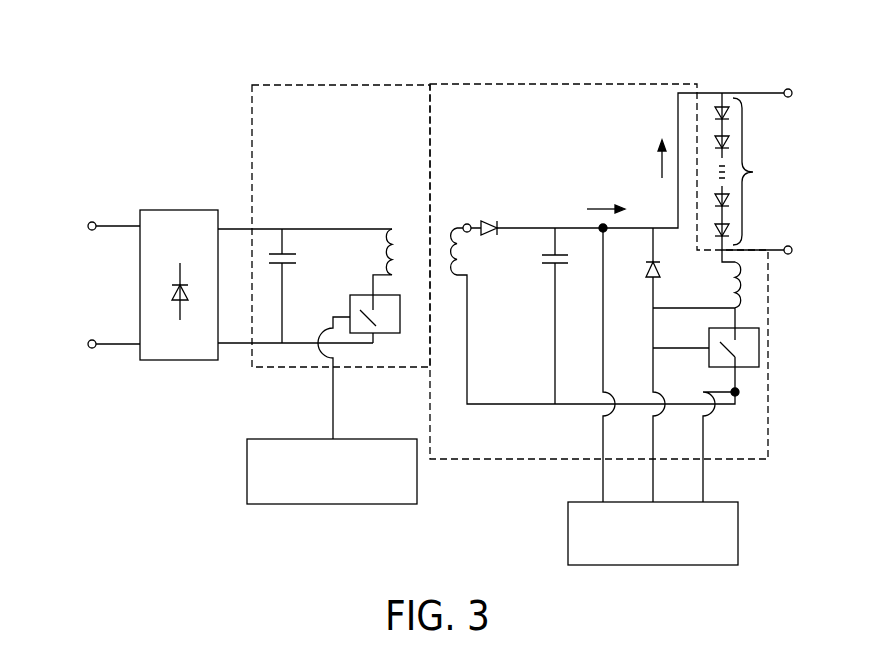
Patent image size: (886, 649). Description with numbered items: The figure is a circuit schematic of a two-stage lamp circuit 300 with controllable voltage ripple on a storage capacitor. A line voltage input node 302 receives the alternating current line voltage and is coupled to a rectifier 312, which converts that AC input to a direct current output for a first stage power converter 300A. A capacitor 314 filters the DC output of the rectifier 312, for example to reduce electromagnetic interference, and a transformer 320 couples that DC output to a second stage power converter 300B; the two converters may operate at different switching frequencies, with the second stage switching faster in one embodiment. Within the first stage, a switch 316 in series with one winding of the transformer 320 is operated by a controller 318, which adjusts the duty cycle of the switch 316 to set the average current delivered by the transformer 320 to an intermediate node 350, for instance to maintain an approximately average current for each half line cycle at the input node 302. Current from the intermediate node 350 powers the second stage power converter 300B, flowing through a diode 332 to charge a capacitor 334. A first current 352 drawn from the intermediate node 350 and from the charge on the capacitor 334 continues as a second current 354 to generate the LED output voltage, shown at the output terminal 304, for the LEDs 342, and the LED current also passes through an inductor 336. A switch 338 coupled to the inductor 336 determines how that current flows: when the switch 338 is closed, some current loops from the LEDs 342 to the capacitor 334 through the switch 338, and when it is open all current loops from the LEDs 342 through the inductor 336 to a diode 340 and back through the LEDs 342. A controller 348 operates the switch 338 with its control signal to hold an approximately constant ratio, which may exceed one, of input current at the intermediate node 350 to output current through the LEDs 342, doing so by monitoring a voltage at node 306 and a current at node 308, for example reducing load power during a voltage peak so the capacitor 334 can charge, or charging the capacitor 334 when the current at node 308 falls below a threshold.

The circuit 300 is at (96, 74).
The first stage power converter 300A is at (250, 112).
The second stage power converter 300B is at (486, 84).
The line voltage input node 302 is at (94, 222).
The output terminal (LED voltage) 304 is at (792, 99).
The node 306 is at (600, 226).
The node 308 is at (739, 391).
The rectifier 312 is at (180, 210).
The capacitor 314 is at (290, 255).
The switch 316 is at (360, 293).
The controller 318 is at (247, 472).
The transformer 320 is at (393, 234).
The diode 332 is at (493, 222).
The capacitor 334 is at (548, 268).
The inductor 336 is at (745, 290).
The switch 338 is at (760, 348).
The diode 340 is at (650, 283).
The LEDs 342 is at (751, 171).
The controller 348 is at (739, 535).
The intermediate node 350 is at (469, 224).
The current i1 352 is at (598, 207).
The current i2 354 is at (658, 168).